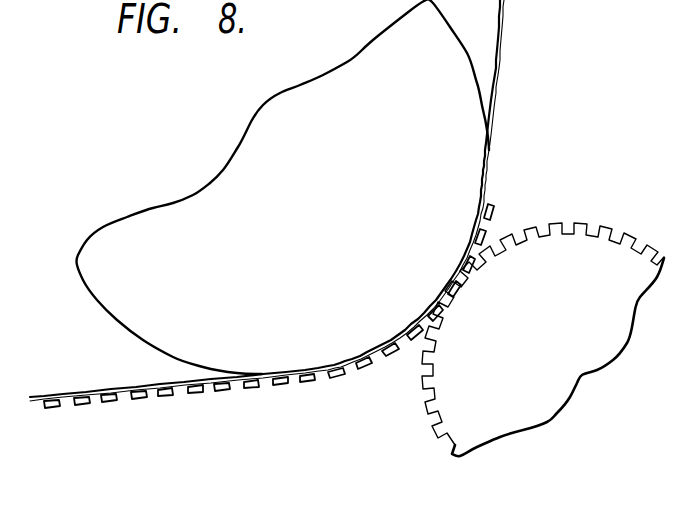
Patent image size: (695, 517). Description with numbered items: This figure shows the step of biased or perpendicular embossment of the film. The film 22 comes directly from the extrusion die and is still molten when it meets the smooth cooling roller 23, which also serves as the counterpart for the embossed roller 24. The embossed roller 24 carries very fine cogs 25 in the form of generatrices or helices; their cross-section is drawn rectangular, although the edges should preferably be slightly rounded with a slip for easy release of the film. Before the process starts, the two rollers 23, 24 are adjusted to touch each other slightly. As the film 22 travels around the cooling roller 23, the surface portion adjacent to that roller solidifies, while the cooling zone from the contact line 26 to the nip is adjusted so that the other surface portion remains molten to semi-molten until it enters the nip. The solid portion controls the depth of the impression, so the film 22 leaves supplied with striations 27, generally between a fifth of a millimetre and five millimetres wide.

The film 22 is at (497, 60).
The smooth cooling roller 23 is at (300, 193).
The embossed roller 24 is at (543, 319).
The cogs 25 is at (555, 220).
The contact line 26 is at (450, 150).
The striations 27 is at (168, 398).